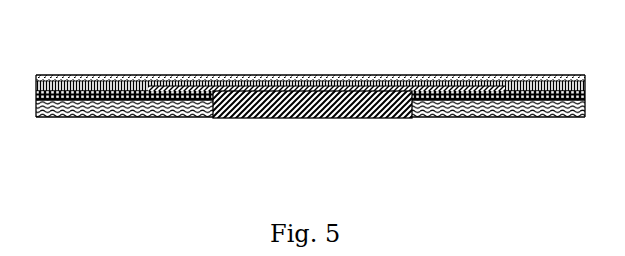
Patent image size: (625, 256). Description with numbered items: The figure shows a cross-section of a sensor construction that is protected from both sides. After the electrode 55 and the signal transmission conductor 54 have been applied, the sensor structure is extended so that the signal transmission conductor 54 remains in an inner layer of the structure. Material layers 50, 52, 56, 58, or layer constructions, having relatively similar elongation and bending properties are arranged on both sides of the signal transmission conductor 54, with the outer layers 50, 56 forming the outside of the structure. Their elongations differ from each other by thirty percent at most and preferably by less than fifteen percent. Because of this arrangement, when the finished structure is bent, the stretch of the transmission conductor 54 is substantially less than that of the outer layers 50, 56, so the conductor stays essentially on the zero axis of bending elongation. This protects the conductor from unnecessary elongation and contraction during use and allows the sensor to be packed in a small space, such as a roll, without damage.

The outer layer 50 is at (477, 117).
The material layer 52 is at (432, 104).
The signal transmission conductor 54 is at (585, 92).
The electrode 55 is at (265, 118).
The outer layer 56 is at (513, 78).
The material layer 58 is at (390, 78).